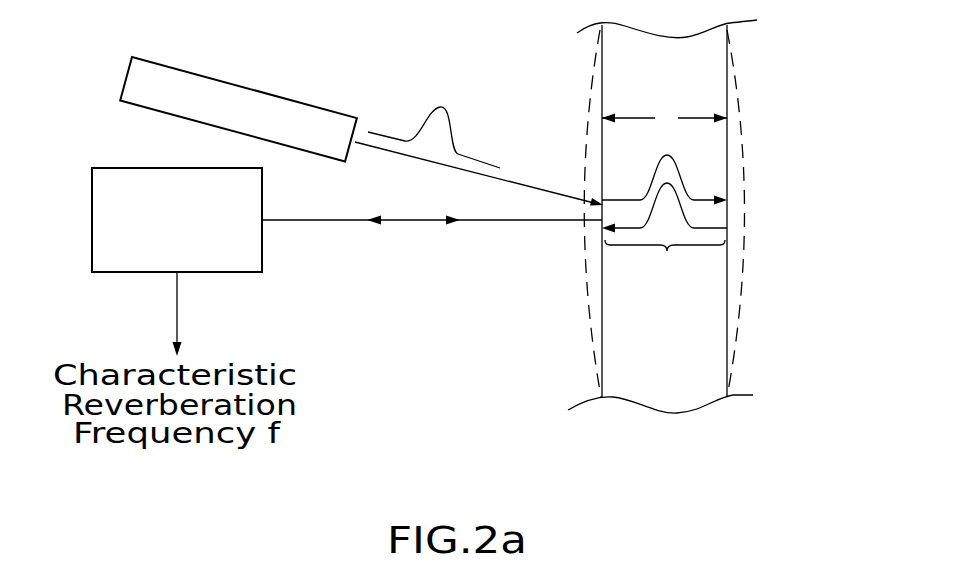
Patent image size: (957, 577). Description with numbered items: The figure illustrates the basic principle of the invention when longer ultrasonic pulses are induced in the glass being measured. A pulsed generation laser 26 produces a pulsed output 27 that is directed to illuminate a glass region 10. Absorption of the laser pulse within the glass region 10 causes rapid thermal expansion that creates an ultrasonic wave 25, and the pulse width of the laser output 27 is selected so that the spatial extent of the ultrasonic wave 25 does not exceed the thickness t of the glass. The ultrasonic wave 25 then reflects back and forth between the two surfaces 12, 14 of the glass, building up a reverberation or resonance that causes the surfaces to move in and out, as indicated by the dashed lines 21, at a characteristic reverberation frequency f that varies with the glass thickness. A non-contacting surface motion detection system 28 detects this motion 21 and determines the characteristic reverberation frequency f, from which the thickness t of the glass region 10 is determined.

The glass region 10 is at (702, 216).
The surface 12 is at (607, 95).
The surface 14 is at (722, 97).
The dashed lines 21 is at (745, 100).
The ultrasonic wave 25 is at (666, 252).
The pulsed generation laser 26 is at (243, 90).
The pulsed output 27 is at (557, 190).
The non-contacting surface motion detection system 28 is at (90, 222).